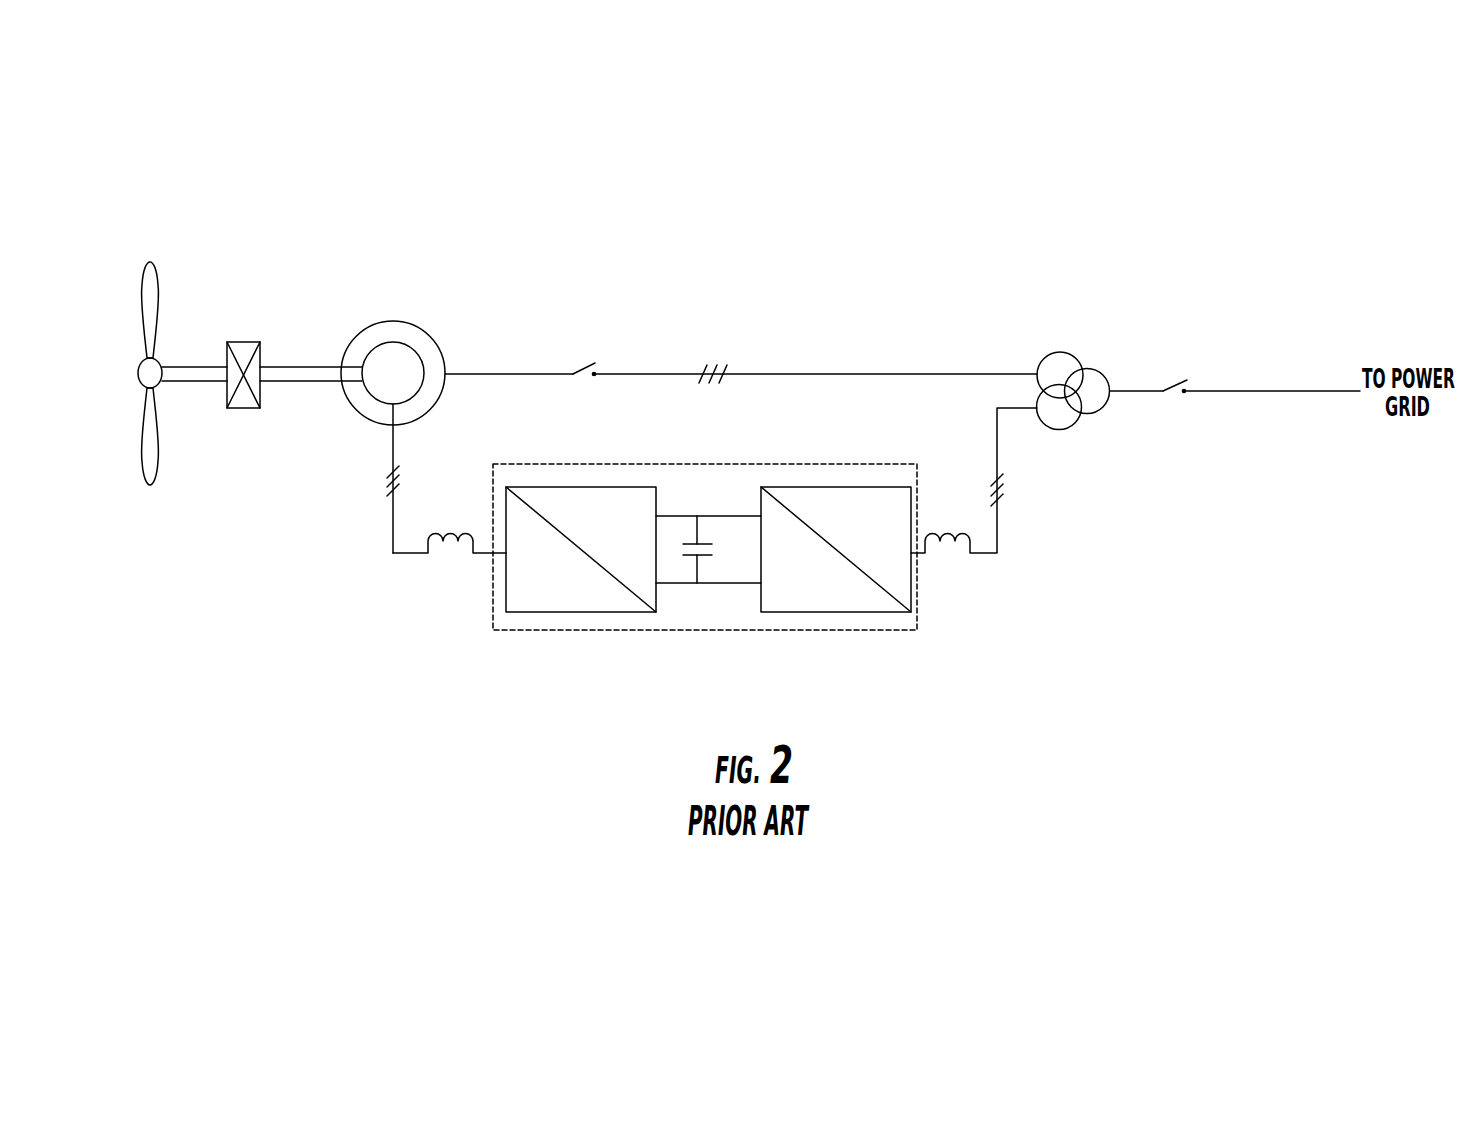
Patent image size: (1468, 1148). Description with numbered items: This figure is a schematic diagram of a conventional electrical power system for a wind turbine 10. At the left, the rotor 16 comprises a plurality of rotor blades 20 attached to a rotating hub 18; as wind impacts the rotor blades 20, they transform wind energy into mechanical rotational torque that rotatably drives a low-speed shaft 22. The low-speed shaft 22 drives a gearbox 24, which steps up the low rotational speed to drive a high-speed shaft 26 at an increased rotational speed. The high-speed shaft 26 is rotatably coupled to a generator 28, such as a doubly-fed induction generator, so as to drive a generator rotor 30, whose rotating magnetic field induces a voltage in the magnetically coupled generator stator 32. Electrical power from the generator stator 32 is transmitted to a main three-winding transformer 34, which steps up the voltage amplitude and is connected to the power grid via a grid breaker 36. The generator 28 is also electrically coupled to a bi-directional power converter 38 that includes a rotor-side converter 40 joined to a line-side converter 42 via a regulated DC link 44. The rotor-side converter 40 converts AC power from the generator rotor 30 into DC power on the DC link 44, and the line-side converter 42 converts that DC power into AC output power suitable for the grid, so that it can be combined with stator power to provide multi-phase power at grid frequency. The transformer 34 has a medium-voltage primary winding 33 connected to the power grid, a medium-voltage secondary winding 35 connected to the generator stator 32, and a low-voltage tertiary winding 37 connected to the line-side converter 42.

The wind turbine 10 is at (155, 236).
The rotor 16 is at (122, 384).
The rotating hub 18 is at (137, 377).
The rotor blades 20 is at (153, 297).
The low-speed shaft 22 is at (203, 379).
The gearbox 24 is at (236, 342).
The high-speed shaft 26 is at (275, 380).
The generator 28 is at (392, 316).
The generator rotor 30 is at (418, 352).
The generator stator 32 is at (377, 424).
The primary winding 33 is at (1092, 412).
The three-winding transformer 34 is at (1088, 322).
The secondary winding 35 is at (1042, 365).
The grid breaker 36 is at (1196, 376).
The tertiary winding 37 is at (1067, 428).
The bi-directional power converter 38 is at (731, 460).
The rotor-side converter 40 is at (565, 613).
The line-side converter 42 is at (852, 613).
The DC link 44 is at (716, 590).